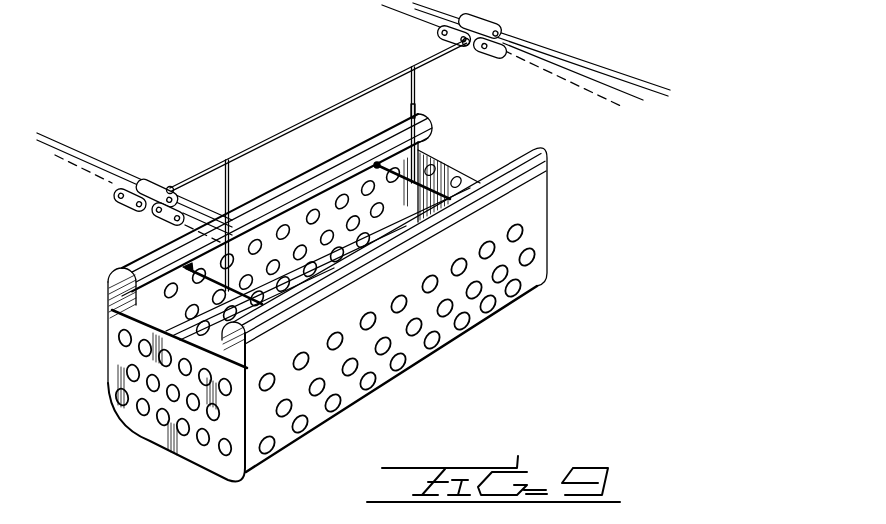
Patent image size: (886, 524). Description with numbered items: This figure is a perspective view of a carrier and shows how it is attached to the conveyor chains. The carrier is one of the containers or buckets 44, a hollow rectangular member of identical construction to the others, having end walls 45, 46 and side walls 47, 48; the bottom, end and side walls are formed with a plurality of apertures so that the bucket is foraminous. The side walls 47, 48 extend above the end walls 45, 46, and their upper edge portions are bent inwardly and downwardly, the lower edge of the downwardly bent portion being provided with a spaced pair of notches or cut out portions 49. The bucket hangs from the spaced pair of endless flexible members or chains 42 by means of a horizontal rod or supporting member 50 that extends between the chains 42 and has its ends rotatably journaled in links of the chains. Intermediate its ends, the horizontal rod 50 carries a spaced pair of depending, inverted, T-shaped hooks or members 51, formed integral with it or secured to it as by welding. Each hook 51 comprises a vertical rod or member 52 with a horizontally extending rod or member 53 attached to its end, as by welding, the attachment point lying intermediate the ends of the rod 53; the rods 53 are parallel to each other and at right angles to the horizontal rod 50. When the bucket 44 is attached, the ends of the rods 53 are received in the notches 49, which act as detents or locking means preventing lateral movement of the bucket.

The endless flexible members or chains 42 is at (147, 186).
The containers or buckets 44 is at (332, 315).
The end wall 45 is at (213, 458).
The end wall 46 is at (457, 167).
The side wall 47 is at (107, 302).
The side wall 48 is at (543, 245).
The notches or cut out portions 49 is at (376, 163).
The horizontal rod or supporting member 50 is at (296, 123).
The depending, inverted, T-shaped hooks or members 51 is at (422, 110).
The vertical rod or member 52 is at (229, 194).
The horizontally extending rod or member 53 is at (184, 267).